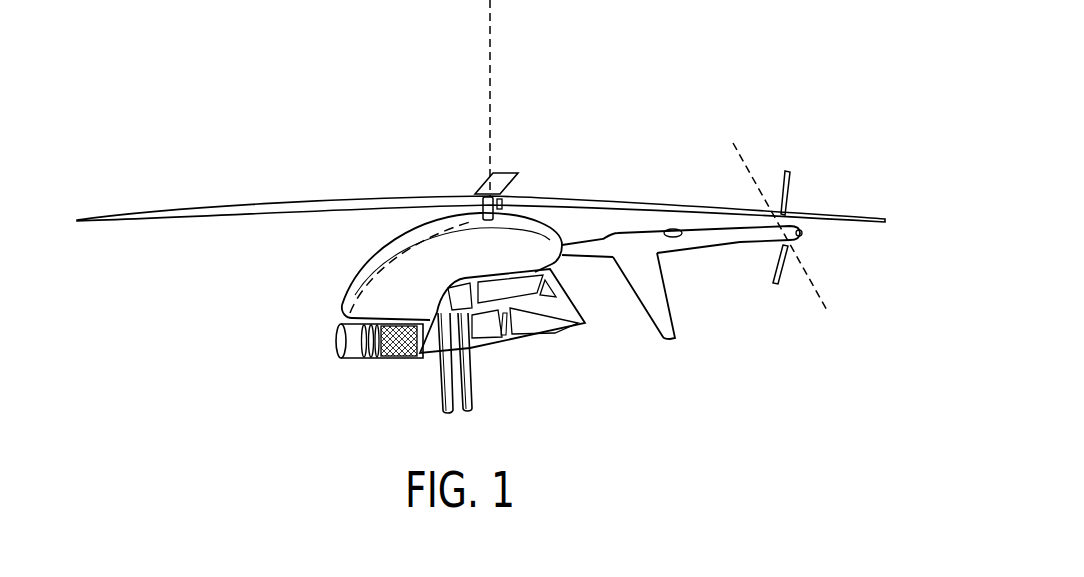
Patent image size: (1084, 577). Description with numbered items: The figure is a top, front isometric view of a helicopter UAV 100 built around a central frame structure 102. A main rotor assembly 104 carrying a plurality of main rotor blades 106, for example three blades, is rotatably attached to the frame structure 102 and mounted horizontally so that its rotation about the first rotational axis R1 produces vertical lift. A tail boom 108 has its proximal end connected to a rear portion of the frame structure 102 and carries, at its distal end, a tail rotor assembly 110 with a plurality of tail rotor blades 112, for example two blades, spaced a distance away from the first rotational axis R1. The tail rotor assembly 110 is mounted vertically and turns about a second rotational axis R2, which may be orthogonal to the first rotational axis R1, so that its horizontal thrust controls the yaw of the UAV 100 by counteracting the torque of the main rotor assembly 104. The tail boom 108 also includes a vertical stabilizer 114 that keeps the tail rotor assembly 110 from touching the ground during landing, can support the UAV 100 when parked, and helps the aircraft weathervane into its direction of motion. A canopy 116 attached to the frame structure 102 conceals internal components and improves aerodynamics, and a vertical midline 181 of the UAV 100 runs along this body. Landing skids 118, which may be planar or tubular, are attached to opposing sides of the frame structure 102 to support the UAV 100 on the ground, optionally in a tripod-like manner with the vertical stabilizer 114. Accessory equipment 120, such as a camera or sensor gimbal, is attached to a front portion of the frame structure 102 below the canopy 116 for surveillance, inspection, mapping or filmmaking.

The helicopter UAV 100 is at (792, 83).
The frame structure 102 is at (537, 333).
The main rotor assembly 104 is at (483, 185).
The main rotor blades 106 is at (200, 203).
The tail boom 108 is at (737, 245).
The tail rotor assembly 110 is at (785, 268).
The tail rotor blades 112 is at (790, 185).
The vertical stabilizer 114 is at (670, 343).
The canopy 116 is at (358, 270).
The landing skids 118 is at (440, 395).
The accessory equipment 120 is at (370, 360).
The vertical midline 181 is at (393, 245).
The first rotational axis R1 is at (492, 55).
The second rotational axis R2 is at (745, 152).